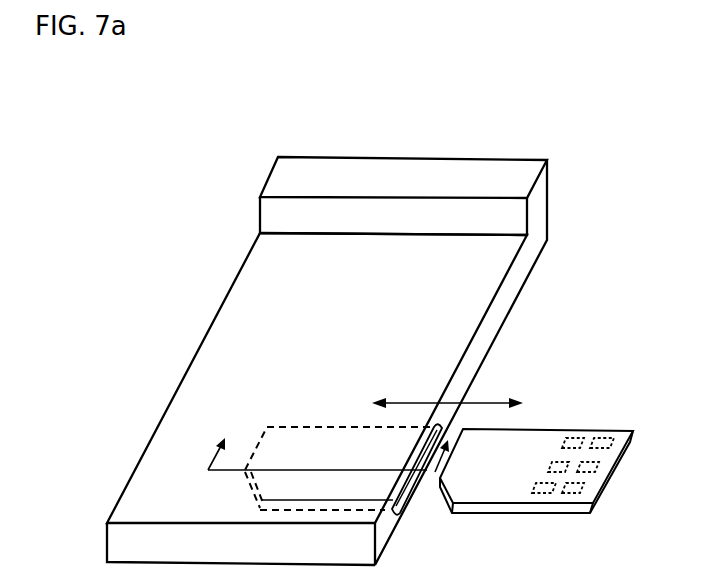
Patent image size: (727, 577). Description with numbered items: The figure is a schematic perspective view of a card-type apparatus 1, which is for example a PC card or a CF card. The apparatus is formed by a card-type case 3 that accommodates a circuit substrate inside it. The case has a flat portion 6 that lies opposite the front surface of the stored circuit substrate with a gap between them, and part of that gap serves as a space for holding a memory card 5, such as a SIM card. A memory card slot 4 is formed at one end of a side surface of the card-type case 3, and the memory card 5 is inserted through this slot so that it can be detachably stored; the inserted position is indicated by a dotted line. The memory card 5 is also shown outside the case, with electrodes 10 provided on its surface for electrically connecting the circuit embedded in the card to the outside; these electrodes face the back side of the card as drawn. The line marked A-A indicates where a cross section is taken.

The card-type apparatus 1 is at (553, 134).
The card-type case 3 is at (455, 330).
The memory card slot 4 is at (425, 428).
The memory card 5 is at (288, 437).
The flat portion 6 is at (215, 362).
The electrodes 10 is at (560, 445).